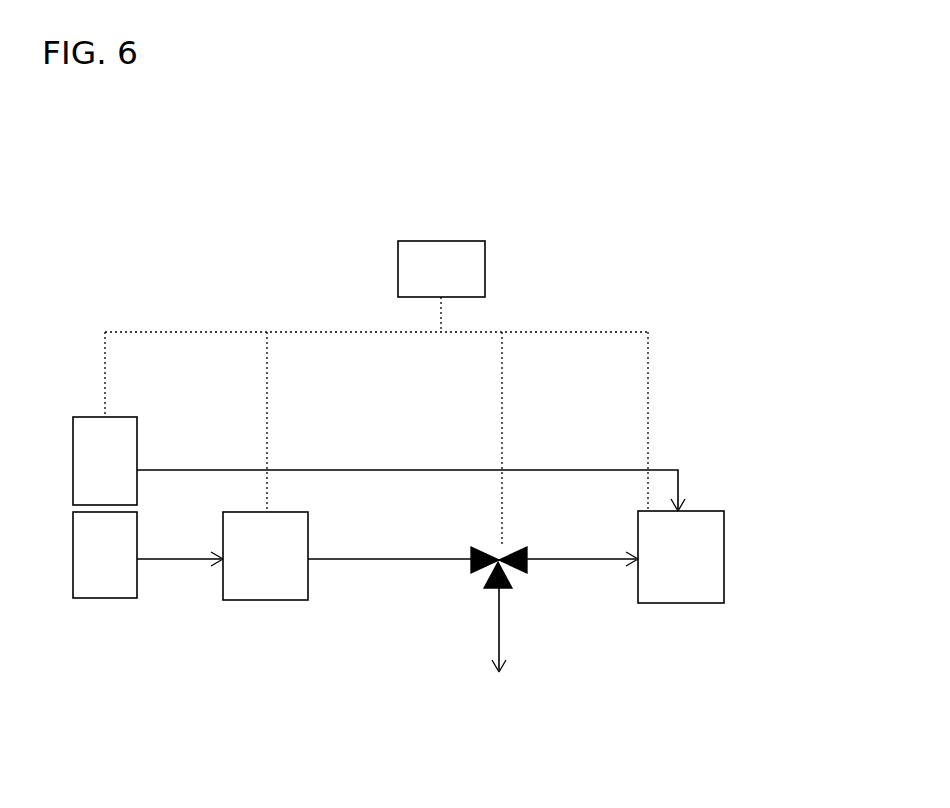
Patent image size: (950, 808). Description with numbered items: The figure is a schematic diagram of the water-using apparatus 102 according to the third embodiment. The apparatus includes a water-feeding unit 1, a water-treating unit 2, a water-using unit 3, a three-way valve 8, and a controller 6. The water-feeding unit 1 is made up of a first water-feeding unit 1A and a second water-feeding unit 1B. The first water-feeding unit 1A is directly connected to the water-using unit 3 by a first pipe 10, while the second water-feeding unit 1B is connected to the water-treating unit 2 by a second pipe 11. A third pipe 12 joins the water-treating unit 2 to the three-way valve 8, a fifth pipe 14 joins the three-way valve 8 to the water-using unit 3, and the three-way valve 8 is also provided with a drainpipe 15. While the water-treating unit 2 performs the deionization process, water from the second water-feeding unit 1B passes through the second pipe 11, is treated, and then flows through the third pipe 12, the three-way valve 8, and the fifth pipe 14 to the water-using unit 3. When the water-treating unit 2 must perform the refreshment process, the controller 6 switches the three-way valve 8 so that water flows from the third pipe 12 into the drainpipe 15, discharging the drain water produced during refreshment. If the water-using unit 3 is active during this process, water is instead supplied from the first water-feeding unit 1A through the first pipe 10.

The water-using apparatus 102 is at (690, 272).
The water-feeding unit 1 is at (60, 413).
The first water-feeding unit 1A is at (105, 461).
The second water-feeding unit 1B is at (105, 555).
The water-treating unit 2 is at (265, 556).
The water-using unit 3 is at (681, 557).
The controller 6 is at (441, 269).
The three-way valve 8 is at (515, 540).
The first pipe 10 is at (182, 468).
The second pipe 11 is at (175, 562).
The third pipe 12 is at (372, 565).
The fifth pipe 14 is at (583, 565).
The drainpipe 15 is at (498, 625).